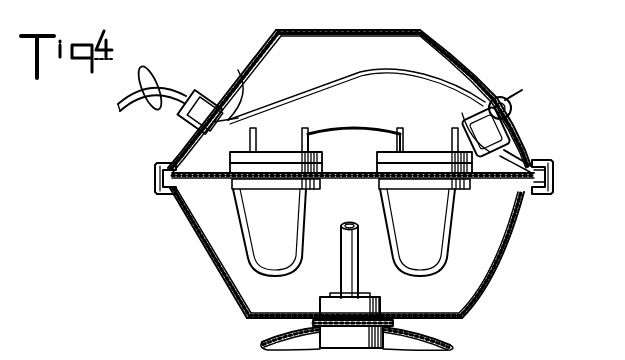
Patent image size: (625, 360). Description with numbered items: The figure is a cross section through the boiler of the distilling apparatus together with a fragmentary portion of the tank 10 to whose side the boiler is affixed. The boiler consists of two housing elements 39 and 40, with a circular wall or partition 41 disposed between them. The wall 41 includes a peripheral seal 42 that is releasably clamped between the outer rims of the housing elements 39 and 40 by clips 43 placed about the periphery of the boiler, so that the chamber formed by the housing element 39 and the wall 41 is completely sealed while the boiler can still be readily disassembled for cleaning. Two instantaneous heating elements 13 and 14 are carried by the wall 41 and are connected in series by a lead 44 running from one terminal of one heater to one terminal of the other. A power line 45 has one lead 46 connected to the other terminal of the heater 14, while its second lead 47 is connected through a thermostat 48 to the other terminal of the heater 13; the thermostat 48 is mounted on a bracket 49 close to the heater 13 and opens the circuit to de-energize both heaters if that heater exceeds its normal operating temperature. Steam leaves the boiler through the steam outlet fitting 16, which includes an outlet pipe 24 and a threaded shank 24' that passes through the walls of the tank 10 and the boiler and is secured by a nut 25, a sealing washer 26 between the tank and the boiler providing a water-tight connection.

The tank 10 is at (262, 342).
The heating element 13 is at (424, 246).
The heating element 14 is at (278, 242).
The steam outlet fitting 16 is at (386, 295).
The outlet pipe 24 is at (344, 241).
The threaded shank 24' is at (340, 286).
The nut 25 is at (320, 307).
The sealing washer 26 is at (437, 315).
The housing element 39 is at (497, 268).
The housing element 40 is at (462, 63).
The circular wall 41 is at (503, 181).
The peripheral seal 42 is at (553, 178).
The clips 43 is at (153, 188).
The lead 44 is at (355, 130).
The power line 45 is at (148, 79).
The lead 46 is at (232, 128).
The lead 47 is at (317, 89).
The thermostat 48 is at (488, 99).
The bracket 49 is at (514, 149).